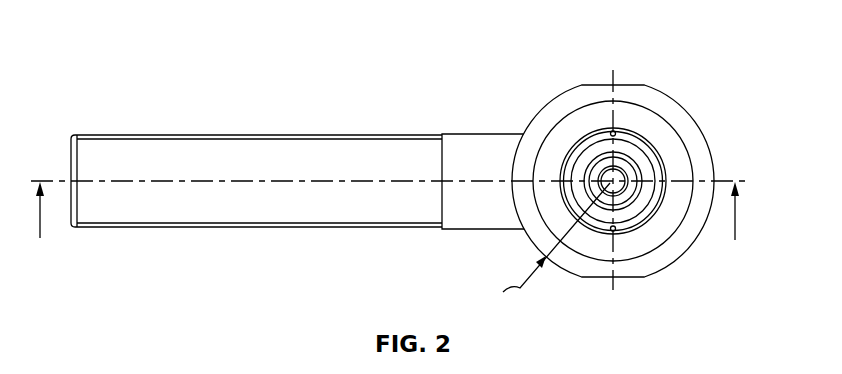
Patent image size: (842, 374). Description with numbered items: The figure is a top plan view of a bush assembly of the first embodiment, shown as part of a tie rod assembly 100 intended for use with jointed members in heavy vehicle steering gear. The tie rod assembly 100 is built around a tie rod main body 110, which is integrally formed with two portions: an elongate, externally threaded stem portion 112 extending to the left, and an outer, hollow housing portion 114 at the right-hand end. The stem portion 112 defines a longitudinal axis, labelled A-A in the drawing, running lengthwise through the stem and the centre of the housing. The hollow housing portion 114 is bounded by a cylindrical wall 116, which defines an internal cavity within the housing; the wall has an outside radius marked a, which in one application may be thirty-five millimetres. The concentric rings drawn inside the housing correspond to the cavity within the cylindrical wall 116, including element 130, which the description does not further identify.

The tie rod assembly 100 is at (186, 53).
The tie rod main body 110 is at (473, 140).
The stem portion 112 is at (202, 228).
The outer housing portion 114 is at (663, 93).
The cylindrical wall 116 is at (652, 265).
The central bore 130 is at (620, 173).